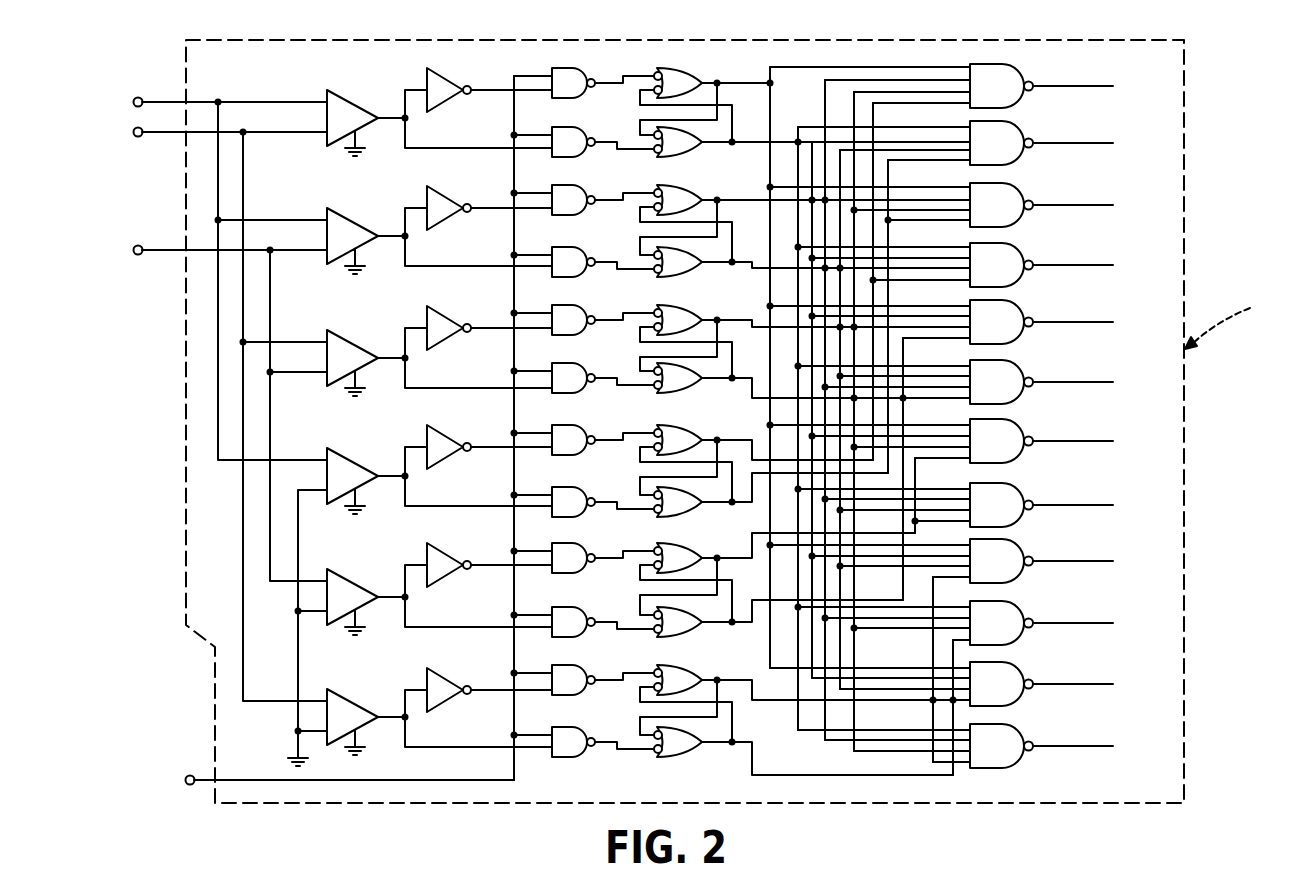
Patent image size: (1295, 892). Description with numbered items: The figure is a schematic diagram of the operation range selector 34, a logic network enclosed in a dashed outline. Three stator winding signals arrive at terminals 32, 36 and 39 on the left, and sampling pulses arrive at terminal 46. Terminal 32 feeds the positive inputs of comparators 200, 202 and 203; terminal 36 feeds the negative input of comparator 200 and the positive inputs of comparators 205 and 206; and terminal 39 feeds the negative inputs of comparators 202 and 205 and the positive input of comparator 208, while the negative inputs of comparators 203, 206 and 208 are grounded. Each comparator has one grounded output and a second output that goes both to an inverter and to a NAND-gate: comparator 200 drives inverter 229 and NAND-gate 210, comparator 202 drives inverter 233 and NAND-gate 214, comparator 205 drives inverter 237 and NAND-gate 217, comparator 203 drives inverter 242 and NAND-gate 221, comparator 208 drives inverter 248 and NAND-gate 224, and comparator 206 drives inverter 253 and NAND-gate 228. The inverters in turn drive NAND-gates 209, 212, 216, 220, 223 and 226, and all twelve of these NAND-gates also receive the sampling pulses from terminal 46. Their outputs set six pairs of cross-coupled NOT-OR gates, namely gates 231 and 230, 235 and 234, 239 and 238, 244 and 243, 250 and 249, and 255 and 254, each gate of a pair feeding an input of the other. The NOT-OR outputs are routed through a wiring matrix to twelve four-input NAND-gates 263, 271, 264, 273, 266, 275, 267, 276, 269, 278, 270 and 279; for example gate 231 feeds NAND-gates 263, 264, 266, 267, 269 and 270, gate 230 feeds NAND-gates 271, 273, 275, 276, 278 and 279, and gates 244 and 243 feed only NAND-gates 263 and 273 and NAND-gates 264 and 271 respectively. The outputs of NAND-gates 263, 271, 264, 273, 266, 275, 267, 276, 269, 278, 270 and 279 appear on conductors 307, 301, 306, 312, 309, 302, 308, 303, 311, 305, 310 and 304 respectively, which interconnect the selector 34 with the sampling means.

The terminal 32 is at (137, 98).
The terminal 36 is at (137, 137).
The terminal 39 is at (136, 255).
The terminal 46 is at (190, 785).
The operation range selector 34 is at (1230, 319).
The comparator 200 is at (439, 123).
The comparator 202 is at (439, 241).
The comparator 205 is at (439, 362).
The comparator 203 is at (439, 480).
The comparator 208 is at (439, 600).
The comparator 206 is at (439, 722).
The inverter 229 is at (452, 86).
The inverter 233 is at (448, 204).
The inverter 237 is at (448, 324).
The inverter 242 is at (448, 443).
The inverter 248 is at (448, 561).
The inverter 253 is at (448, 686).
The NAND-gate 209 is at (584, 83).
The NAND-gate 210 is at (584, 142).
The NAND-gate 212 is at (584, 200).
The NAND-gate 214 is at (584, 262).
The NAND-gate 216 is at (584, 320).
The NAND-gate 217 is at (584, 378).
The NAND-gate 220 is at (584, 440).
The NAND-gate 221 is at (584, 502).
The NAND-gate 223 is at (584, 558).
The NAND-gate 224 is at (584, 622).
The NAND-gate 226 is at (584, 680).
The NAND-gate 228 is at (584, 742).
The NOT-OR gate 231 is at (705, 101).
The NOT-OR gate 230 is at (805, 123).
The NOT-OR gate 235 is at (805, 220).
The NOT-OR gate 234 is at (805, 242).
The NOT-OR gate 239 is at (805, 338).
The NOT-OR gate 238 is at (805, 362).
The NOT-OR gate 244 is at (756, 460).
The NOT-OR gate 243 is at (764, 482).
The NOT-OR gate 250 is at (777, 574).
The NOT-OR gate 249 is at (771, 601).
The NOT-OR gate 255 is at (805, 700).
The NOT-OR gate 254 is at (796, 731).
The NAND-gate 263 is at (901, 86).
The NAND-gate 271 is at (915, 143).
The NAND-gate 264 is at (901, 205).
The NAND-gate 273 is at (915, 265).
The NAND-gate 266 is at (901, 322).
The NAND-gate 275 is at (915, 382).
The NAND-gate 267 is at (901, 441).
The NAND-gate 276 is at (915, 505).
The NAND-gate 269 is at (901, 561).
The NAND-gate 278 is at (915, 623).
The NAND-gate 270 is at (901, 684).
The NAND-gate 279 is at (915, 746).
The conductor 307 is at (1053, 85).
The conductor 301 is at (1053, 142).
The conductor 306 is at (1053, 204).
The conductor 312 is at (1053, 264).
The conductor 309 is at (1053, 321).
The conductor 302 is at (1053, 381).
The conductor 308 is at (1053, 440).
The conductor 303 is at (1053, 504).
The conductor 311 is at (1053, 560).
The conductor 305 is at (1053, 622).
The conductor 310 is at (1053, 683).
The conductor 304 is at (1053, 745).